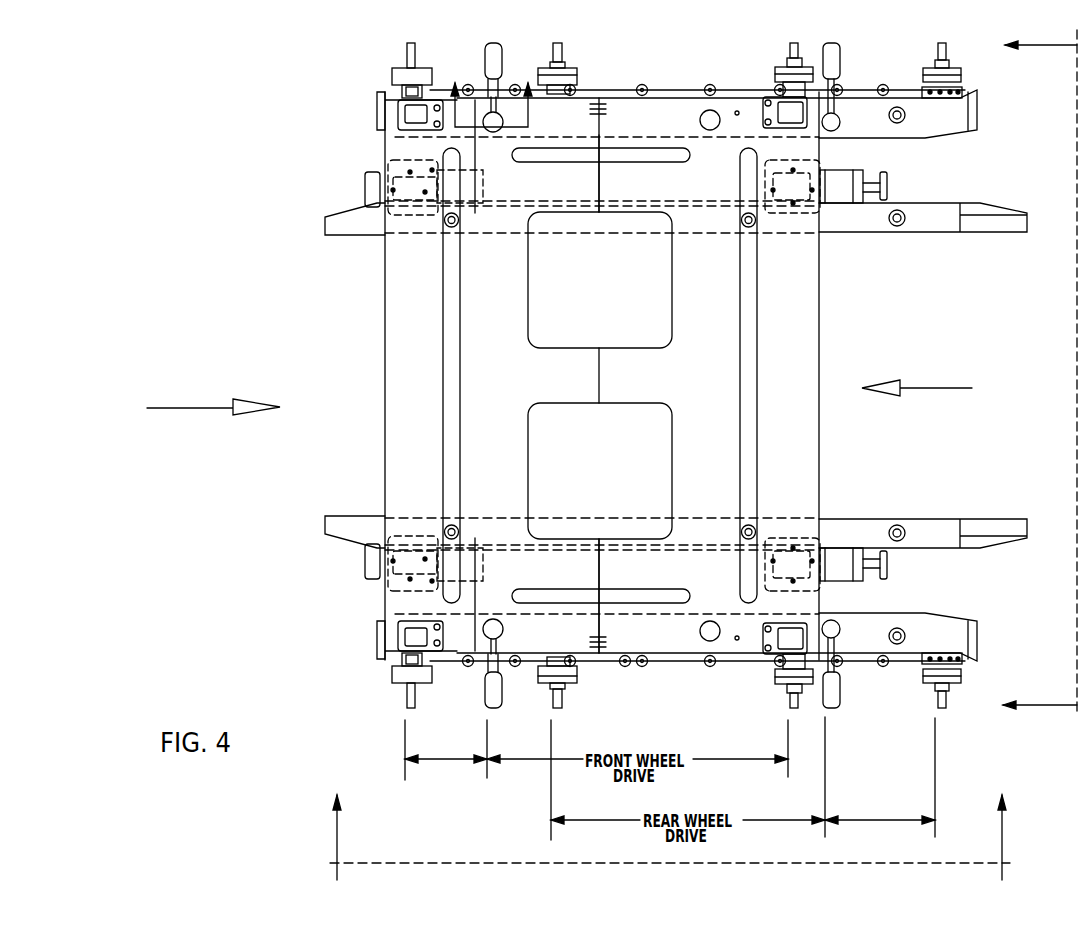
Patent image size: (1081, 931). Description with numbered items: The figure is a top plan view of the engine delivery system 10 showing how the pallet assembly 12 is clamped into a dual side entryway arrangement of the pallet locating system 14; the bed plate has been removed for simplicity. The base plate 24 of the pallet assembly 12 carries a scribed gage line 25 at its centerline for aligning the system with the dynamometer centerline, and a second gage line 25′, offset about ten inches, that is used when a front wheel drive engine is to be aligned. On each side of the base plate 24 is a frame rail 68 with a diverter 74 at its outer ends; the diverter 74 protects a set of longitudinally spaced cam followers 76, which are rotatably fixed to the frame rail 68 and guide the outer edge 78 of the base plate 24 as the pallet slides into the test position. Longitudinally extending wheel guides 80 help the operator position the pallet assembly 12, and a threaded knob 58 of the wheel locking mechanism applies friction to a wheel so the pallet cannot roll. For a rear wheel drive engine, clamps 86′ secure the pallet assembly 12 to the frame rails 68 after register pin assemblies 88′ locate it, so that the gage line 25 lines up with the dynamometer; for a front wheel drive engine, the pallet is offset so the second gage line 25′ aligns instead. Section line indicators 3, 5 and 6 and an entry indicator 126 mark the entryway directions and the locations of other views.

The section line 3- 3 is at (1029, 375).
The section line 5- 5 is at (670, 819).
The section line 6- 6 is at (489, 88).
The engine delivery system 10 is at (180, 527).
The pallet assembly 12 is at (347, 330).
The pallet locating system 14 is at (923, 508).
The base plate 24 is at (400, 392).
The gage line 25 is at (601, 127).
The second gage line 25′ is at (473, 132).
The threaded knob 58 is at (887, 560).
The frame rail 68 is at (397, 101).
The diverter 74 is at (387, 92).
The cam follower 76 is at (712, 89).
The outer edge 78 is at (622, 666).
The wheel guide 80 is at (323, 235).
The clamp 86′ is at (563, 45).
The register pin assembly 88′ is at (864, 14).
The entry direction 126 is at (935, 386).